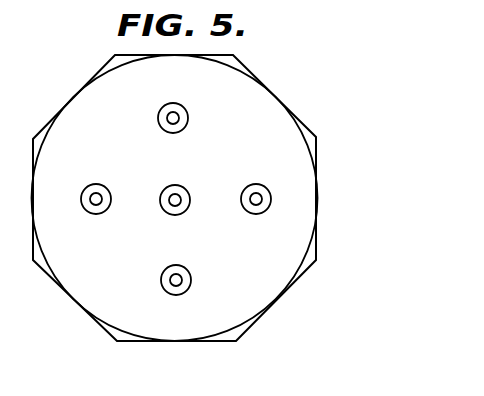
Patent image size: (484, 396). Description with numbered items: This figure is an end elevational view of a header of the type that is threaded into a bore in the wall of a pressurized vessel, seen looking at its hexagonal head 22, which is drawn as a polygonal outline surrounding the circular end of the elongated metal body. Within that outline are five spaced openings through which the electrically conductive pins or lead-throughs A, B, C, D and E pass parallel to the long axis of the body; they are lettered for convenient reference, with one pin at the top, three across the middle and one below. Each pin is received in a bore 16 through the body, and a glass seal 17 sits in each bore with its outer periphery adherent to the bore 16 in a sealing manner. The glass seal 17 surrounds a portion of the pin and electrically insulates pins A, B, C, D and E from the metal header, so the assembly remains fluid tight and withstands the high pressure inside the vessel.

The hexagonal head 22 is at (75, 98).
The bore 16 is at (173, 213).
The glass seal 17 is at (91, 211).
The pin A is at (178, 114).
The pin B is at (181, 275).
The pin C is at (259, 194).
The pin D is at (180, 195).
The pin E is at (100, 194).